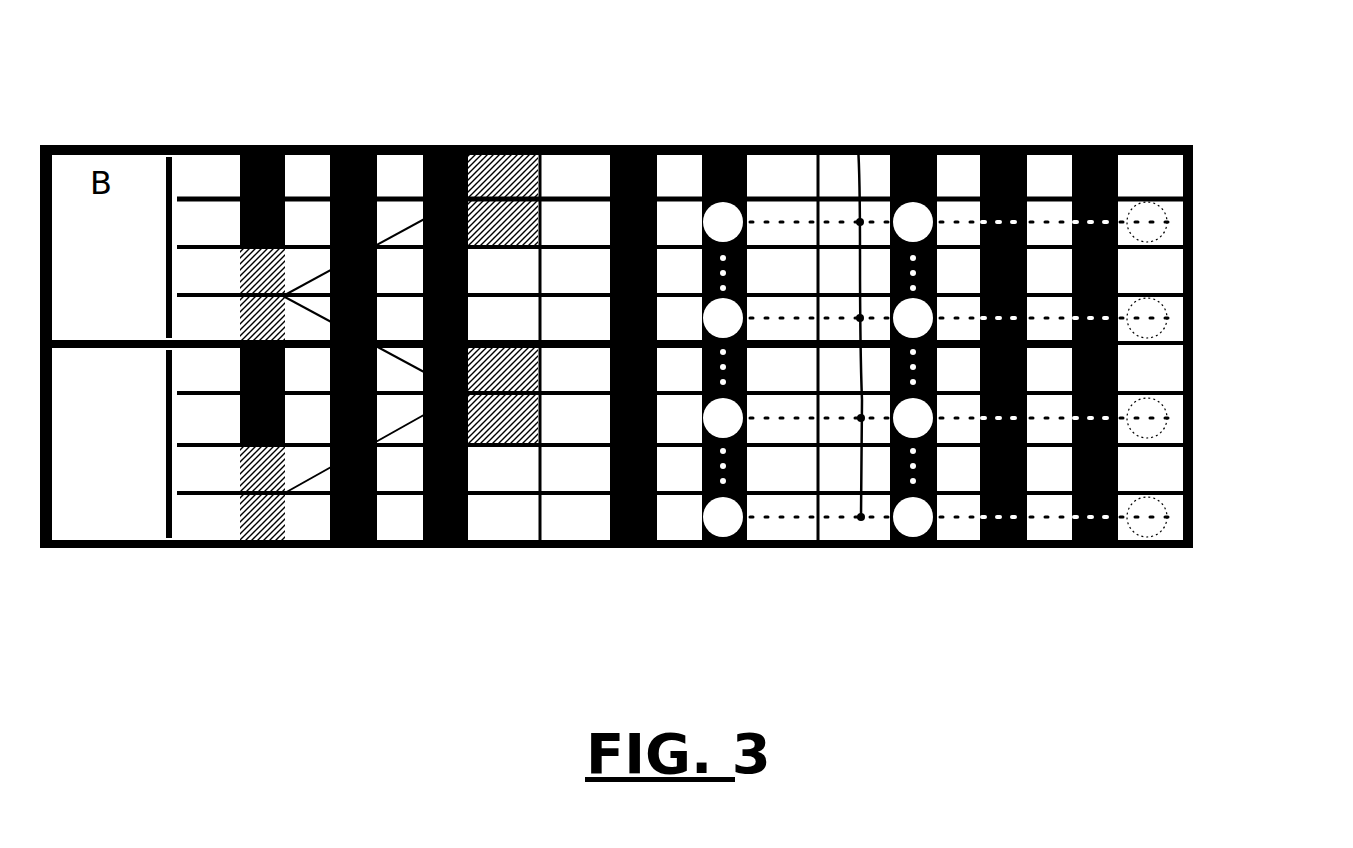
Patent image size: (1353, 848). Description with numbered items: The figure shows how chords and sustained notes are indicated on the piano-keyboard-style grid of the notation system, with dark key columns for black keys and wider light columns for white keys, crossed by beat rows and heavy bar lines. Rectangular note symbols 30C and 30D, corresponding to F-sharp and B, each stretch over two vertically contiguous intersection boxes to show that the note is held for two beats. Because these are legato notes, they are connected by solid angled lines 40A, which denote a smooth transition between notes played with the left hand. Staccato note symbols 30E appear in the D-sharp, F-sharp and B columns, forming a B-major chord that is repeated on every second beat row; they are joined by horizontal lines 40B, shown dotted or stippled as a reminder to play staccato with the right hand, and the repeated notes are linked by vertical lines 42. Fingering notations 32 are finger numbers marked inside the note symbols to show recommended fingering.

The lines connecting left-hand notes 40A is at (400, 230).
The fingering notations 32 is at (712, 222).
The lines connecting right-hand notes 40B is at (858, 147).
The vertical lines 42 is at (1278, 63).
The rectangular note symbol 30C is at (252, 454).
The rectangular note symbol 30D is at (533, 421).
The staccato note symbols 30E is at (735, 523).